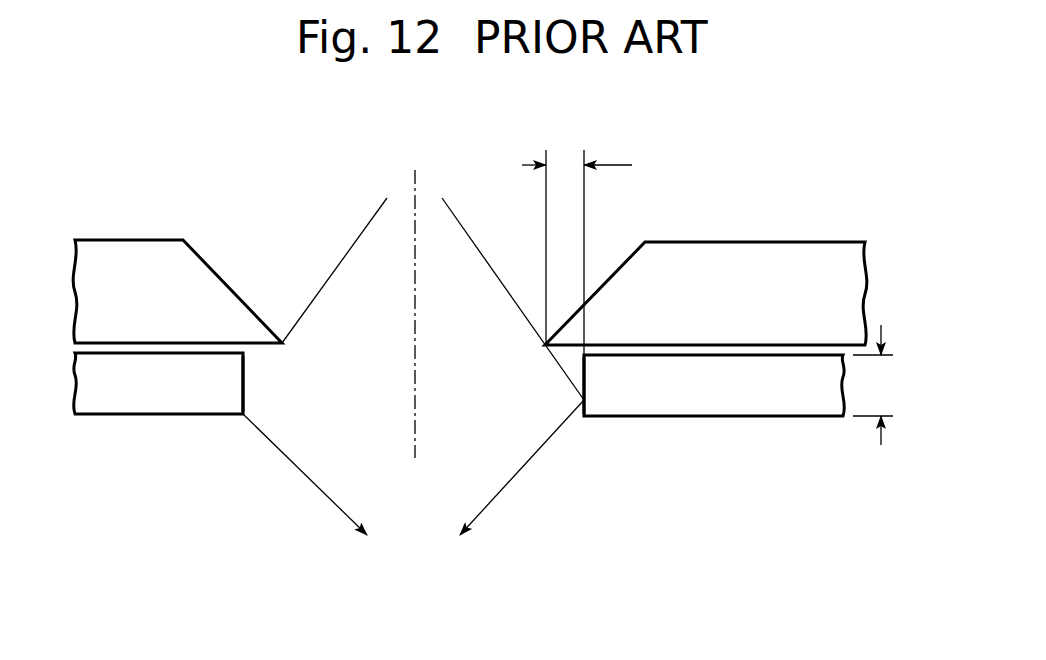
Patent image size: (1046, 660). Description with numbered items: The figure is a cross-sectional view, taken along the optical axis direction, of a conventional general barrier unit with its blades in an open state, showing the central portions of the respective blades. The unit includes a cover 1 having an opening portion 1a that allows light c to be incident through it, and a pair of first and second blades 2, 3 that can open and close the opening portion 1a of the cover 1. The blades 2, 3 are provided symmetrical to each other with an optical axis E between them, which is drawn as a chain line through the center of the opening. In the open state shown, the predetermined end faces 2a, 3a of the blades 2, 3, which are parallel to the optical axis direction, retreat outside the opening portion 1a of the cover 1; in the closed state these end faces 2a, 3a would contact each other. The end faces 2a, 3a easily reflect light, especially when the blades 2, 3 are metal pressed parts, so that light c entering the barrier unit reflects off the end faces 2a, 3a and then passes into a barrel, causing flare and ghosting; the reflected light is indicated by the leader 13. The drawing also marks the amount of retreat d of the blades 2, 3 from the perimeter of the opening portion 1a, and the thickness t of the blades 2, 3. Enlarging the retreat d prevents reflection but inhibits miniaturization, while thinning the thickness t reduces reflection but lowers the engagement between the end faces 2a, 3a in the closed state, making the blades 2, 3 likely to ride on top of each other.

The cover 1 is at (137, 253).
The opening portion 1a is at (308, 507).
The first blade 2 is at (760, 400).
The end face of first blade 2a is at (584, 383).
The second blade 3 is at (147, 395).
The end face of second blade 3a is at (243, 378).
The gap / beam path 13 is at (518, 345).
The light c is at (471, 215).
The optical axis E is at (415, 272).
The amount of retreat d is at (577, 249).
The thickness of blades t is at (876, 385).